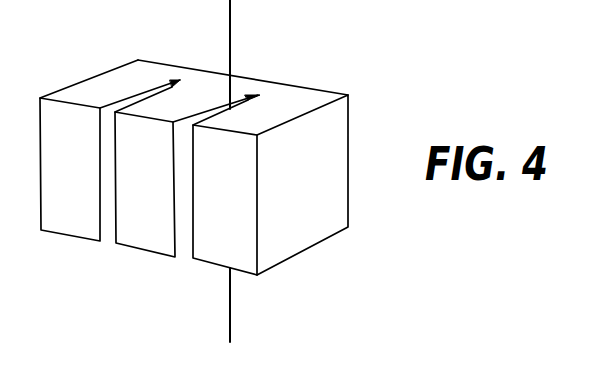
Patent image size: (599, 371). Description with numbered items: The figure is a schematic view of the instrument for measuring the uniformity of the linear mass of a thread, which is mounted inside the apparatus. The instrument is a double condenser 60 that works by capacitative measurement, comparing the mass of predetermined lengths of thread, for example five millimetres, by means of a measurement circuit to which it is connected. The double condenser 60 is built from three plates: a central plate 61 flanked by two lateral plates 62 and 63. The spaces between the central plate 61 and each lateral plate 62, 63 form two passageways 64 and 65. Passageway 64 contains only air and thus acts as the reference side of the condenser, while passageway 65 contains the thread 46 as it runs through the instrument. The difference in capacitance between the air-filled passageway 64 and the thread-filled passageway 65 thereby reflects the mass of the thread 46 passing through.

The thread 46 is at (232, 22).
The double condenser 60 is at (200, 164).
The central plate 61 is at (185, 102).
The lateral plate 62 is at (88, 93).
The lateral plate 63 is at (258, 123).
The passageway 64 is at (189, 255).
The passageway 65 is at (111, 238).